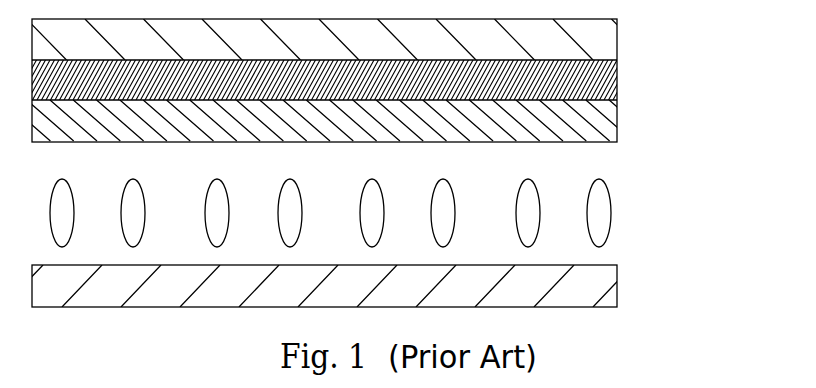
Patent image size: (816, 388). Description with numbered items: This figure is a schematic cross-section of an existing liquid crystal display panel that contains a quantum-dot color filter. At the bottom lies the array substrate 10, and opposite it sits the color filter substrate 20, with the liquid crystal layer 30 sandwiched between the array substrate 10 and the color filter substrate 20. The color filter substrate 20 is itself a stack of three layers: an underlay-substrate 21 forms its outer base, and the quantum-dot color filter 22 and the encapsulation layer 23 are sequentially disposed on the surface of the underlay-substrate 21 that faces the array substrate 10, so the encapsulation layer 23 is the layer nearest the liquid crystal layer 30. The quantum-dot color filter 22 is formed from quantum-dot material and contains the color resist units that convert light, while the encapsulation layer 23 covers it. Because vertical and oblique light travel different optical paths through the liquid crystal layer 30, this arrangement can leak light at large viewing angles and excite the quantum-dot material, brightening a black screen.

The array substrate 10 is at (616, 285).
The color filter substrate 20 is at (377, 78).
The underlay-substrate 21 is at (563, 45).
The quantum-dot color filter 22 is at (568, 80).
The encapsulation layer 23 is at (563, 126).
The liquid crystal layer 30 is at (612, 218).